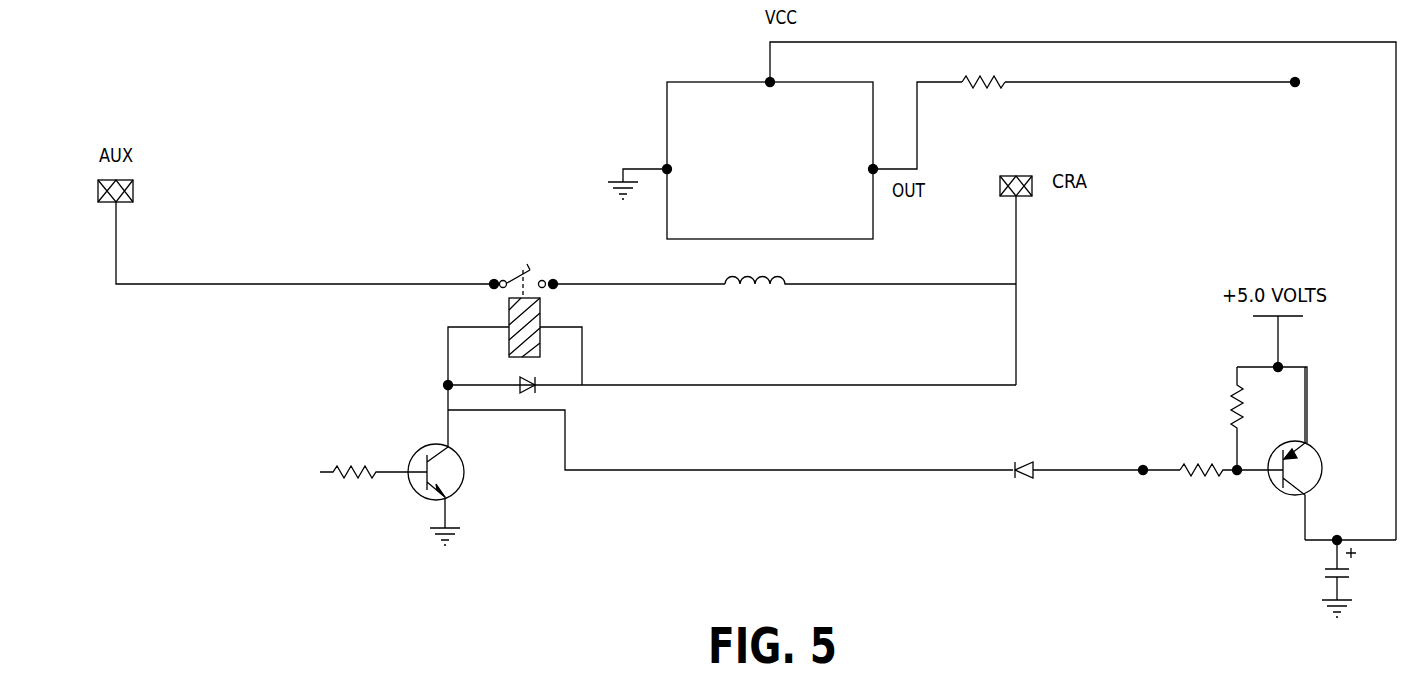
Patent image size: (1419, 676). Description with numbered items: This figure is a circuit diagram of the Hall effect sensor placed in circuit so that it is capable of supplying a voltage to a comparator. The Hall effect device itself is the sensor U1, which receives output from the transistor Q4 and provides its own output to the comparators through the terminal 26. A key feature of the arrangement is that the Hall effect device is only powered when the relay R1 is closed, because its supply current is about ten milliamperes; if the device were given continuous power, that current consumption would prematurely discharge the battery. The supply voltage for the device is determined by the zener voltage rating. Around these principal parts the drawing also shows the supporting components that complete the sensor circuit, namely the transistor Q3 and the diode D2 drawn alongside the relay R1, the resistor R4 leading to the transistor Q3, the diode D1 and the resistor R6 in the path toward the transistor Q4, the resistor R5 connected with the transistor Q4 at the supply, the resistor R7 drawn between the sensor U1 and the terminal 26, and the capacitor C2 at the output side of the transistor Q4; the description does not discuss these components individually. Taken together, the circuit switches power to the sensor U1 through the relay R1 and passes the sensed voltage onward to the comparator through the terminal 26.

The terminal 26 is at (1293, 92).
The Hall effect sensor U1 is at (770, 160).
The resistor 4K7 R7 is at (985, 97).
The relay R1 is at (524, 300).
The diode 1N4007 D2 is at (455, 367).
The transistor 8050 Q3 is at (471, 474).
The resistor 1K R4 is at (373, 454).
The diode 1N4148 D1 is at (1027, 504).
The resistor 1K5 R6 is at (1231, 496).
The resistor 47K R5 is at (1213, 418).
The transistor Q4 is at (1315, 453).
The capacitor 47uF C2 is at (1366, 570).